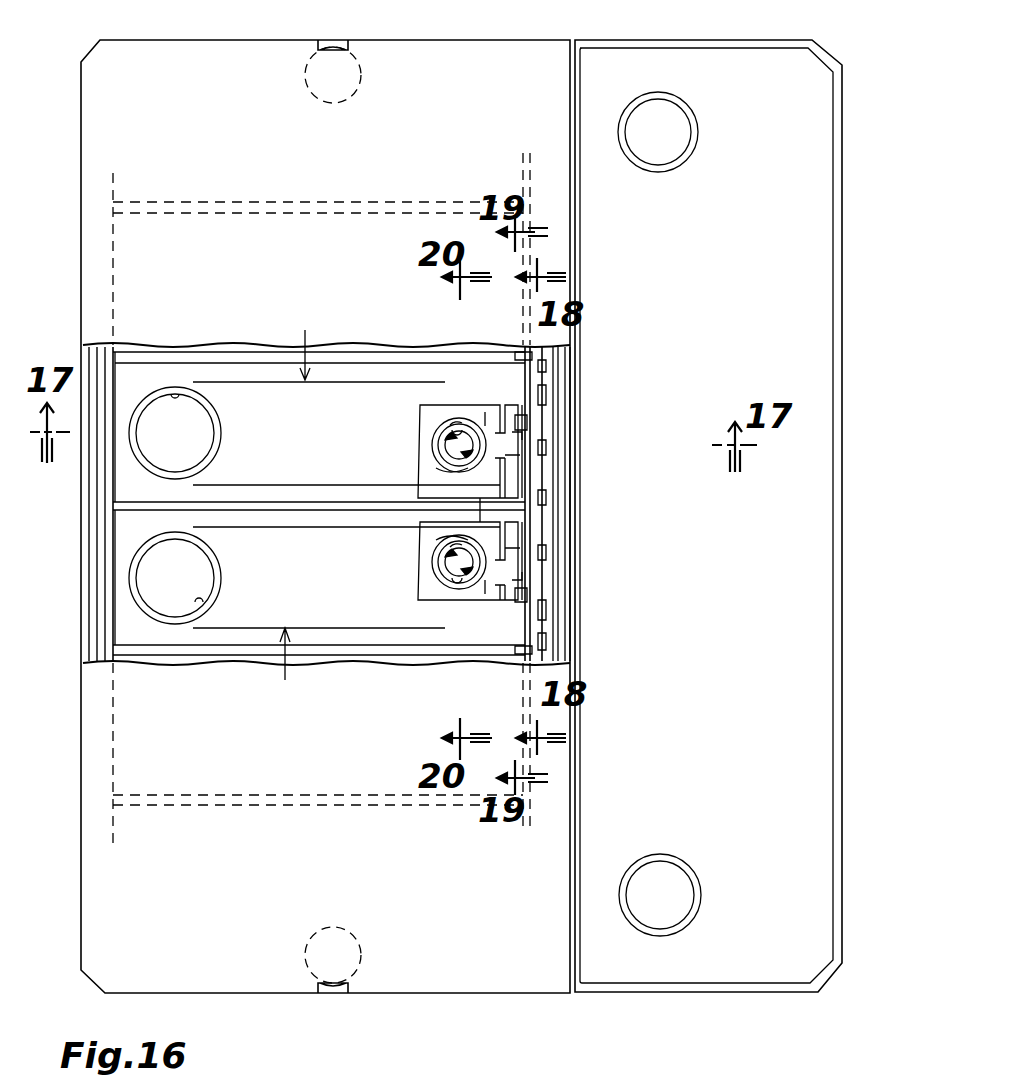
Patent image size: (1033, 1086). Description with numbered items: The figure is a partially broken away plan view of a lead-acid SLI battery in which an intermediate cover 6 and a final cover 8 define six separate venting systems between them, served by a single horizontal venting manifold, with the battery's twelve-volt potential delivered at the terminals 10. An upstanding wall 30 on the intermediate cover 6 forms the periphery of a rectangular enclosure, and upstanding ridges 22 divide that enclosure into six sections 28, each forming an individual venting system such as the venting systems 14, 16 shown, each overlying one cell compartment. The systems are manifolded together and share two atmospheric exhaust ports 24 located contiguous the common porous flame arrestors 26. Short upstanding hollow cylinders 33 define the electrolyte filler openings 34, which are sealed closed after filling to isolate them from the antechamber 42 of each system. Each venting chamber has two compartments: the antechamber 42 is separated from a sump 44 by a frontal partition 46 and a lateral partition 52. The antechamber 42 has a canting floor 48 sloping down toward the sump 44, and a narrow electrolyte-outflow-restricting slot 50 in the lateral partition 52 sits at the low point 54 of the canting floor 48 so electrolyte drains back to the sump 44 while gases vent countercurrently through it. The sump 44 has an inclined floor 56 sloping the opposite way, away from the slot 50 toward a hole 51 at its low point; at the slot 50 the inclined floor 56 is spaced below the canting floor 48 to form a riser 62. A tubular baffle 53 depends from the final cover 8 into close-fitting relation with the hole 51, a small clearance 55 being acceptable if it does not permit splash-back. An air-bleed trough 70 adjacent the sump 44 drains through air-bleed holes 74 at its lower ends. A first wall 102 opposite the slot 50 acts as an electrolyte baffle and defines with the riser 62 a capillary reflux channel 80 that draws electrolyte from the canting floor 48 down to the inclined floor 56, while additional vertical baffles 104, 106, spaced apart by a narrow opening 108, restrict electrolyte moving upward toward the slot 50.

The intermediate cover 6 is at (708, 975).
The final cover 8 is at (541, 982).
The terminals 10 is at (672, 138).
The venting system 14 is at (100, 520).
The venting system 16 is at (114, 562).
The upstanding ridges 22 is at (247, 205).
The atmospheric exhaust ports 24 is at (348, 42).
The porous flame arrestors 26 is at (352, 80).
The sections 28 is at (143, 356).
The upstanding wall 30 is at (113, 499).
The upstanding hollow cylinders 33 is at (216, 440).
The filler openings 34 is at (173, 394).
The antechamber 42 is at (283, 498).
The sump 44 is at (420, 508).
The frontal partition 46 is at (432, 432).
The canting floor 48 is at (338, 378).
The electrolyte-outflow-restricting slot 50 is at (536, 392).
The hole 51 is at (455, 430).
The lateral partition 52 is at (448, 426).
The tubular baffle 53 is at (442, 430).
The low point 54 is at (517, 352).
The clearance 55 is at (446, 446).
The inclined floor 56 is at (430, 463).
The riser 62 is at (527, 420).
The trough 70 is at (546, 378).
The air-bleed holes 74 is at (540, 366).
The capillary reflux channel 80 is at (518, 405).
The first wall 102 is at (522, 436).
The vertical baffle 104 is at (486, 420).
The vertical baffle 106 is at (482, 512).
The narrow opening 108 is at (510, 455).